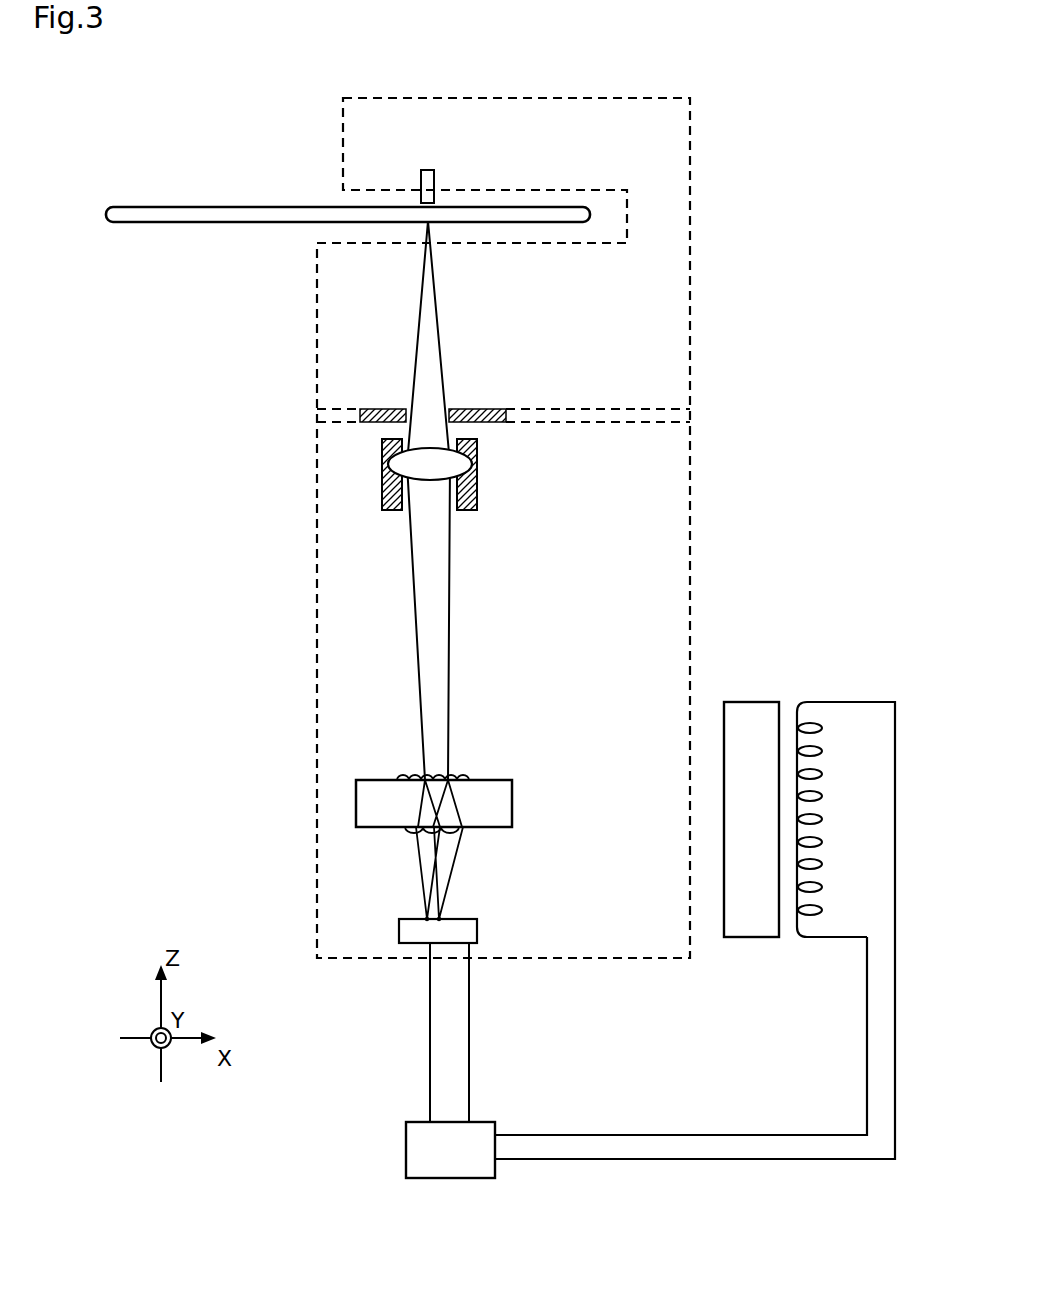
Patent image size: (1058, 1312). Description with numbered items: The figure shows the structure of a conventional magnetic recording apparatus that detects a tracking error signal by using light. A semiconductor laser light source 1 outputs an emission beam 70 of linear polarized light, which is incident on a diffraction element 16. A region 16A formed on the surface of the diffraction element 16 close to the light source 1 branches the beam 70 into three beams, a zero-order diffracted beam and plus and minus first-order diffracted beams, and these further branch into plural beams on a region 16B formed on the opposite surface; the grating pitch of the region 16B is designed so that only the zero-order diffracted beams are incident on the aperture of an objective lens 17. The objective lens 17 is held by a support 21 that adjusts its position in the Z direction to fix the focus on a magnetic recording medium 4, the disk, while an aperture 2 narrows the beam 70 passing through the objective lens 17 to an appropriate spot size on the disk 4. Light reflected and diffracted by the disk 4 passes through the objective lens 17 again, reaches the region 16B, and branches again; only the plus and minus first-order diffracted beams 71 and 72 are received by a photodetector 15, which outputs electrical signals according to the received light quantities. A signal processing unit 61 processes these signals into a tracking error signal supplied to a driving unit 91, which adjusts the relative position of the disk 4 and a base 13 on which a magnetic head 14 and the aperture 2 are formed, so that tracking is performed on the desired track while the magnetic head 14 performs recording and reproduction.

The semiconductor laser light source 1 is at (440, 923).
The aperture 2 is at (448, 410).
The magnetic recording medium 4 is at (201, 207).
The base 13 is at (692, 258).
The magnetic head 14 is at (434, 176).
The photodetector 15 is at (399, 927).
The diffraction element 16 is at (351, 790).
The region of diffraction element 16A is at (407, 829).
The region of diffraction element 16B is at (402, 777).
The objective lens 17 is at (428, 480).
The support 21 is at (385, 450).
The signal processing unit 61 is at (487, 1122).
The emission beam 70 is at (427, 922).
The first-order diffracted beam 71 is at (405, 900).
The first-order diffracted beam 72 is at (473, 906).
The driving unit 91 is at (789, 941).